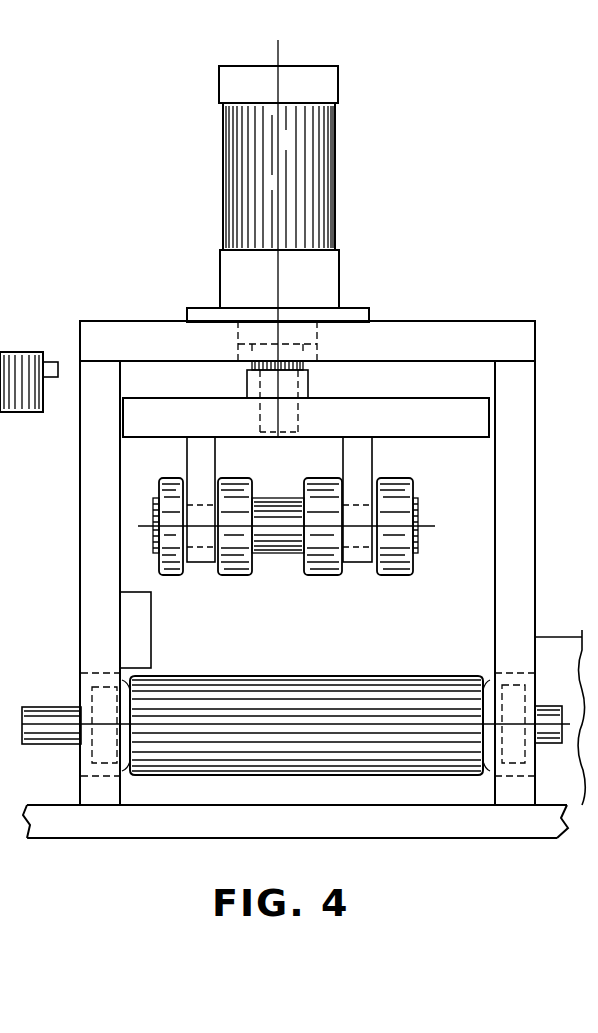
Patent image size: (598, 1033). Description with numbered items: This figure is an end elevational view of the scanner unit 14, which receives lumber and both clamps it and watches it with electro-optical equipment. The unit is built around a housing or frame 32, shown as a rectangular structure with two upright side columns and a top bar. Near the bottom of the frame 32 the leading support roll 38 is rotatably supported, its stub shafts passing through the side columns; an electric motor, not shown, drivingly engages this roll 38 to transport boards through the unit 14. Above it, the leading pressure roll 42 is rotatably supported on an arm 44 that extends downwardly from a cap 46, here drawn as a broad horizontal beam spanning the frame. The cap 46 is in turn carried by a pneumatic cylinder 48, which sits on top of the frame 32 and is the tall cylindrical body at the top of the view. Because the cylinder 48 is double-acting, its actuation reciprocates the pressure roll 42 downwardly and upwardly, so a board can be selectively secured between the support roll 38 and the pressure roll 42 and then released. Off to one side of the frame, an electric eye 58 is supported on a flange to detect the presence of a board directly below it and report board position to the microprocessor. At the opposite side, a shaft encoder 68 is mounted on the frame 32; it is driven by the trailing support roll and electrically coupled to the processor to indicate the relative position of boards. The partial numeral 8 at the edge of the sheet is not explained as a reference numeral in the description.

The scanner unit 14 is at (458, 232).
The housing or frame 32 is at (80, 643).
The leading support roll 38 is at (295, 700).
The leading pressure roll 42 is at (170, 575).
The arm 44 is at (198, 464).
The cap 46 is at (463, 421).
The pneumatic cylinder 48 is at (336, 183).
The electric eye 58 is at (15, 372).
The shaft encoder 68 is at (557, 648).
The partial numeral (18) 8 is at (6, 151).